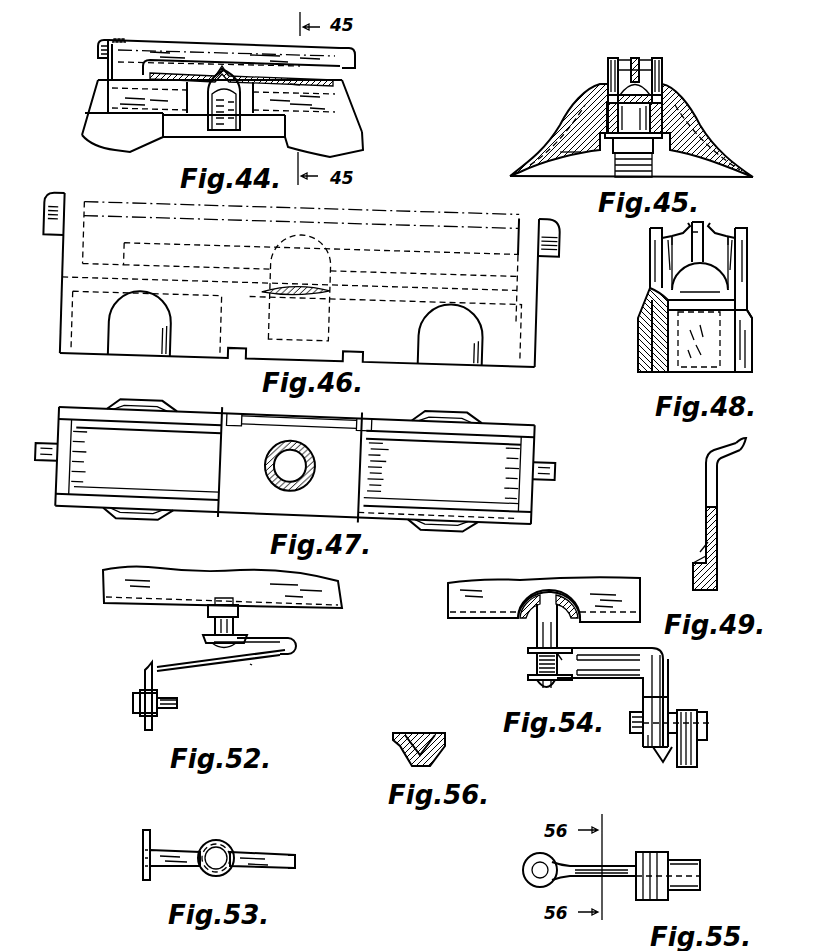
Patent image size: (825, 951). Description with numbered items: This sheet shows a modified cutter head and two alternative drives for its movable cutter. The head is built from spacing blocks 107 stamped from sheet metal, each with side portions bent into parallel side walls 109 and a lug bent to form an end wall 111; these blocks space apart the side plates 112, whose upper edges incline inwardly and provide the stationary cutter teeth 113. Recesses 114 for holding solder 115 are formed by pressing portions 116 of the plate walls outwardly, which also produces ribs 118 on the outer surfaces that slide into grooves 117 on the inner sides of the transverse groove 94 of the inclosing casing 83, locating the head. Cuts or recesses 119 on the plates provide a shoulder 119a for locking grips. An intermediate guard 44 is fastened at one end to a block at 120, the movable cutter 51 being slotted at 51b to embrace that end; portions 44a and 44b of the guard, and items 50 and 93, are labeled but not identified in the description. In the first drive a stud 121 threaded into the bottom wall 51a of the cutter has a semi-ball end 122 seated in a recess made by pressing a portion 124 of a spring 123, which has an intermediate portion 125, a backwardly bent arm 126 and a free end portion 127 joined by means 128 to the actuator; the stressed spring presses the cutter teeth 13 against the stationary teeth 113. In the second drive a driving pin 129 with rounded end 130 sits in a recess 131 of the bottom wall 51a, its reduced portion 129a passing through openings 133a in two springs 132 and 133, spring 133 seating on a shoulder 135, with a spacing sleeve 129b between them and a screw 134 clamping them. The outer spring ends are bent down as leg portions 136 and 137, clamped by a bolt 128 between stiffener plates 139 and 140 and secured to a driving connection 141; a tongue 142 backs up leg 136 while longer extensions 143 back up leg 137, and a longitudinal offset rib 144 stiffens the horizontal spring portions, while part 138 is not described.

In FIG. 48, the teeth 13 is at (733, 230).
In FIG. 44, the intermediate guard 44 is at (248, 53).
In FIG. 46, the intermediate guard 44 is at (558, 247).
In FIG. 48, the intermediate guard 44 is at (700, 223).
In FIG. 44, the central pin 44a is at (118, 38).
In FIG. 45, the central pin 44a is at (633, 60).
In FIG. 44, the rounded end tab 44b is at (104, 38).
In FIG. 46, the rounded end tab 44b is at (52, 202).
In FIG. 44, the pin / boss 50 is at (210, 123).
In FIG. 47, the pin / boss 50 is at (266, 470).
In FIG. 48, the inner or movable cutter 51 is at (730, 283).
In FIG. 52, the inner or movable cutter 51 is at (340, 590).
In FIG. 54, the inner or movable cutter 51 is at (610, 592).
In FIG. 44, the bottom wall 51a is at (300, 87).
In FIG. 52, the bottom wall 51a is at (300, 606).
In FIG. 54, the bottom wall 51a is at (463, 618).
In FIG. 44, the slot 51b is at (147, 70).
In FIG. 44, the inclosing casing 83 is at (365, 148).
In FIG. 45, the inclosing casing 83 is at (528, 154).
In FIG. 44, the apex 93 is at (227, 68).
In FIG. 44, the transverse groove 94 is at (98, 100).
In FIG. 45, the transverse groove 94 is at (612, 82).
In FIG. 44, the spacing blocks 107 is at (135, 105).
In FIG. 45, the spacing blocks 107 is at (627, 122).
In FIG. 46, the spacing blocks 107 is at (222, 330).
In FIG. 48, the spacing blocks 107 is at (662, 372).
In FIG. 47, the spacing blocks 107 is at (98, 480).
In FIG. 47, the side walls 109 is at (140, 438).
In FIG. 48, the end wall 111 is at (707, 363).
In FIG. 47, the end wall 111 is at (60, 478).
In FIG. 45, the side plates 112 is at (610, 62).
In FIG. 46, the side plates 112 is at (525, 280).
In FIG. 48, the side plates 112 is at (647, 272).
In FIG. 47, the side plates 112 is at (222, 416).
In FIG. 49, the side plates 112 is at (708, 498).
In FIG. 48, the stationary cutter teeth 113 is at (718, 225).
In FIG. 49, the stationary cutter teeth 113 is at (742, 449).
In FIG. 47, the recesses 114 is at (185, 412).
In FIG. 48, the solder 115 is at (653, 373).
In FIG. 47, the solder 115 is at (470, 426).
In FIG. 45, the pressed-out wall portion 116 is at (607, 112).
In FIG. 46, the pressed-out wall portion 116 is at (138, 345).
In FIG. 48, the pressed-out wall portion 116 is at (640, 352).
In FIG. 47, the pressed-out wall portion 116 is at (165, 402).
In FIG. 49, the pressed-out wall portion 116 is at (693, 563).
In FIG. 45, the grooves 117 is at (660, 85).
In FIG. 45, the ribs 118 is at (577, 115).
In FIG. 46, the cuts or recesses 119 is at (326, 294).
In FIG. 47, the cuts or recesses 119 is at (306, 398).
In FIG. 49, the cuts or recesses 119 is at (708, 547).
In FIG. 46, the shoulder 119a is at (306, 340).
In FIG. 49, the shoulder 119a is at (707, 555).
In FIG. 44, the guard fastening 120 is at (128, 74).
In FIG. 52, the stud 121 is at (212, 625).
In FIG. 52, the semi-ball shaped end 122 is at (210, 645).
In FIG. 52, the spring 123 is at (278, 669).
In FIG. 52, the pressed portion 124 is at (237, 642).
In FIG. 53, the pressed portion 124 is at (232, 842).
In FIG. 52, the intermediate portion 125 is at (227, 665).
In FIG. 53, the intermediate portion 125 is at (190, 866).
In FIG. 52, the arm 126 is at (297, 638).
In FIG. 53, the arm 126 is at (266, 858).
In FIG. 52, the free end portion 127 is at (147, 727).
In FIG. 53, the free end portion 127 is at (140, 876).
In FIG. 52, the connecting means or bolt 128 is at (175, 710).
In FIG. 54, the driving pin 129 is at (533, 642).
In FIG. 54, the reduced portion 129a is at (530, 665).
In FIG. 54, the spacing sleeve 129b is at (563, 655).
In FIG. 54, the semi-ball shaped end 130 is at (537, 622).
In FIG. 54, the recess 131 is at (557, 607).
In FIG. 54, the spring 132 is at (572, 680).
In FIG. 54, the spring 133 is at (605, 650).
In FIG. 56, the spring 133 is at (446, 742).
In FIG. 55, the spring 133 is at (612, 862).
In FIG. 55, the openings 133a is at (538, 872).
In FIG. 54, the screw 134 is at (538, 688).
In FIG. 54, the shoulder 135 is at (530, 657).
In FIG. 54, the leg portion 136 is at (643, 737).
In FIG. 54, the leg portion 137 is at (663, 707).
In FIG. 54, the bolt 138 is at (707, 725).
In FIG. 54, the stiffener plate 139 is at (647, 747).
In FIG. 54, the stiffener plates 140 is at (663, 763).
In FIG. 54, the driving connection 141 is at (693, 757).
In FIG. 55, the driving connection 141 is at (680, 862).
In FIG. 54, the tongue 142 is at (643, 687).
In FIG. 54, the extensions 143 is at (660, 672).
In FIG. 54, the groove 144 is at (590, 693).
In FIG. 56, the groove 144 is at (436, 762).